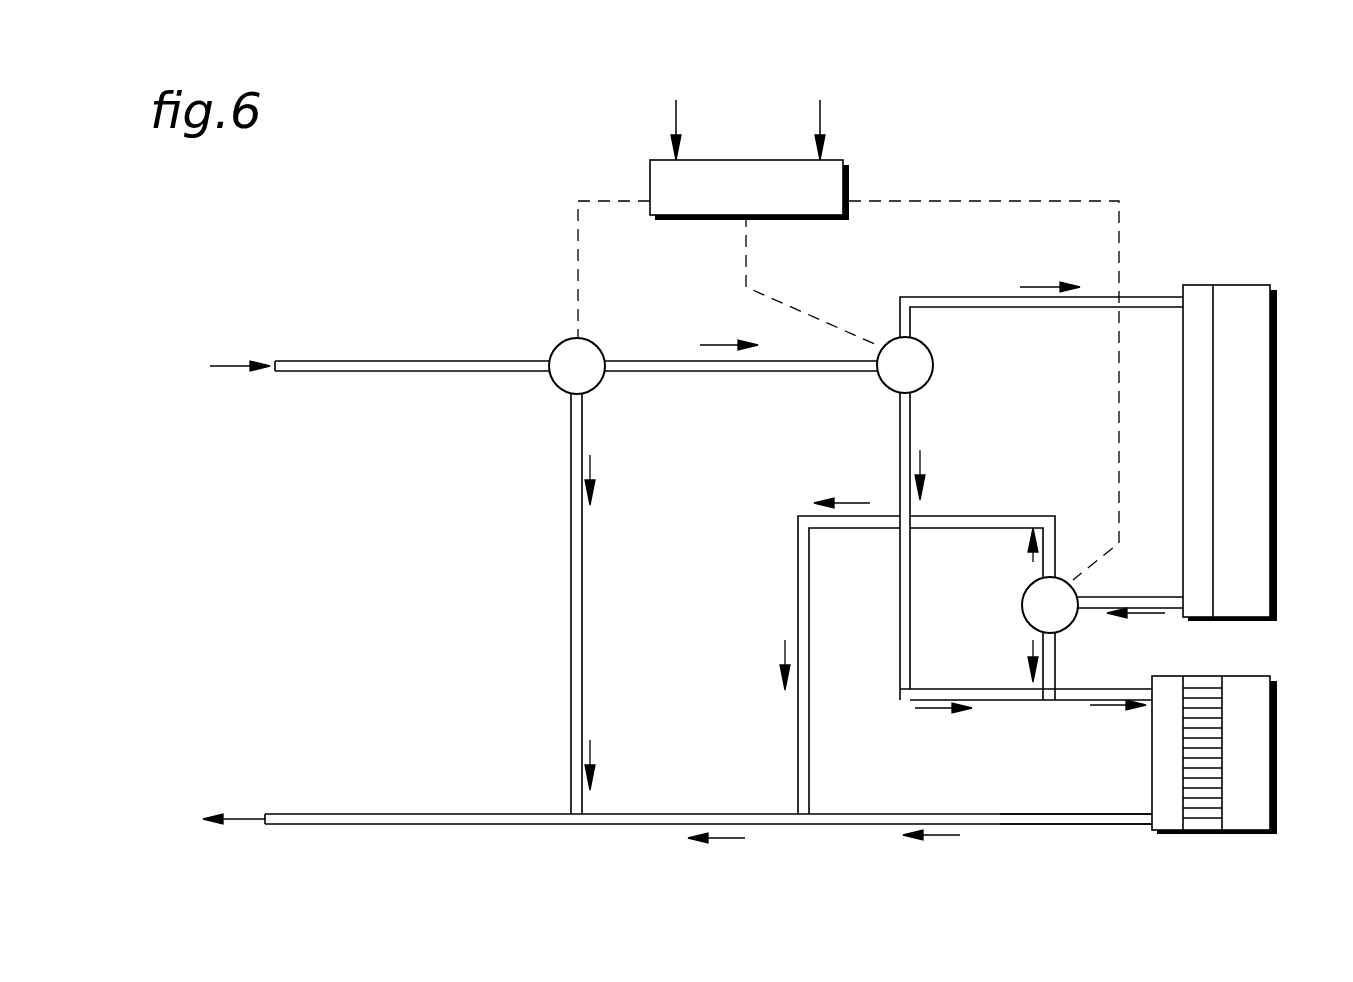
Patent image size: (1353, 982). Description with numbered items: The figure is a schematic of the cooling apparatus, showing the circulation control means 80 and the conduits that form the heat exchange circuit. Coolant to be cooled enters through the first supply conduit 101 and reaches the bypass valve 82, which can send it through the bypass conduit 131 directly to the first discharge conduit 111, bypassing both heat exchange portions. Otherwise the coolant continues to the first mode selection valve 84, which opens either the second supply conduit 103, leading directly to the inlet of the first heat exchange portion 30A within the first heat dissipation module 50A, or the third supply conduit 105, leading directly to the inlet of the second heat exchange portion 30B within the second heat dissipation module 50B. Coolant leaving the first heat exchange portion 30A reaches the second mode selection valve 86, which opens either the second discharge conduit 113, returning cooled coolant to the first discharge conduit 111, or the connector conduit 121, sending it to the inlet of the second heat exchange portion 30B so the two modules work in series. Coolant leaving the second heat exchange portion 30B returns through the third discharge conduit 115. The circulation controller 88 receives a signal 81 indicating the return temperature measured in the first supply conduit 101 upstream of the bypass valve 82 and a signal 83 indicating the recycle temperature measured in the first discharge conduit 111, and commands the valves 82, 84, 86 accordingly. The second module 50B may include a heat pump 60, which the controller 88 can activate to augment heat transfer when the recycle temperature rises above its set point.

The circulation control means 80 is at (528, 182).
The signal 81 is at (676, 118).
The bypass valve 82 is at (558, 346).
The signal 83 is at (822, 118).
The first mode selection valve 84 is at (930, 357).
The second mode selection valve 86 is at (1020, 606).
The circulation controller 88 is at (760, 196).
The first supply conduit 101 is at (380, 360).
The second supply conduit 103 is at (968, 297).
The third supply conduit 105 is at (898, 460).
The first discharge conduit 111 is at (290, 826).
The second discharge conduit 113 is at (797, 600).
The third discharge conduit 115 is at (1010, 826).
The connector conduit 121 is at (1057, 670).
The bypass conduit 131 is at (570, 603).
The first portion of the heat dissipation modules 50A is at (1222, 285).
The second portion of the heat dissipation modules 50B is at (1247, 832).
The first portion of the coolant heat exchange means 30A is at (1183, 505).
The second portion of the coolant heat exchange means 30B is at (1152, 738).
The heat pump 60 is at (1206, 832).